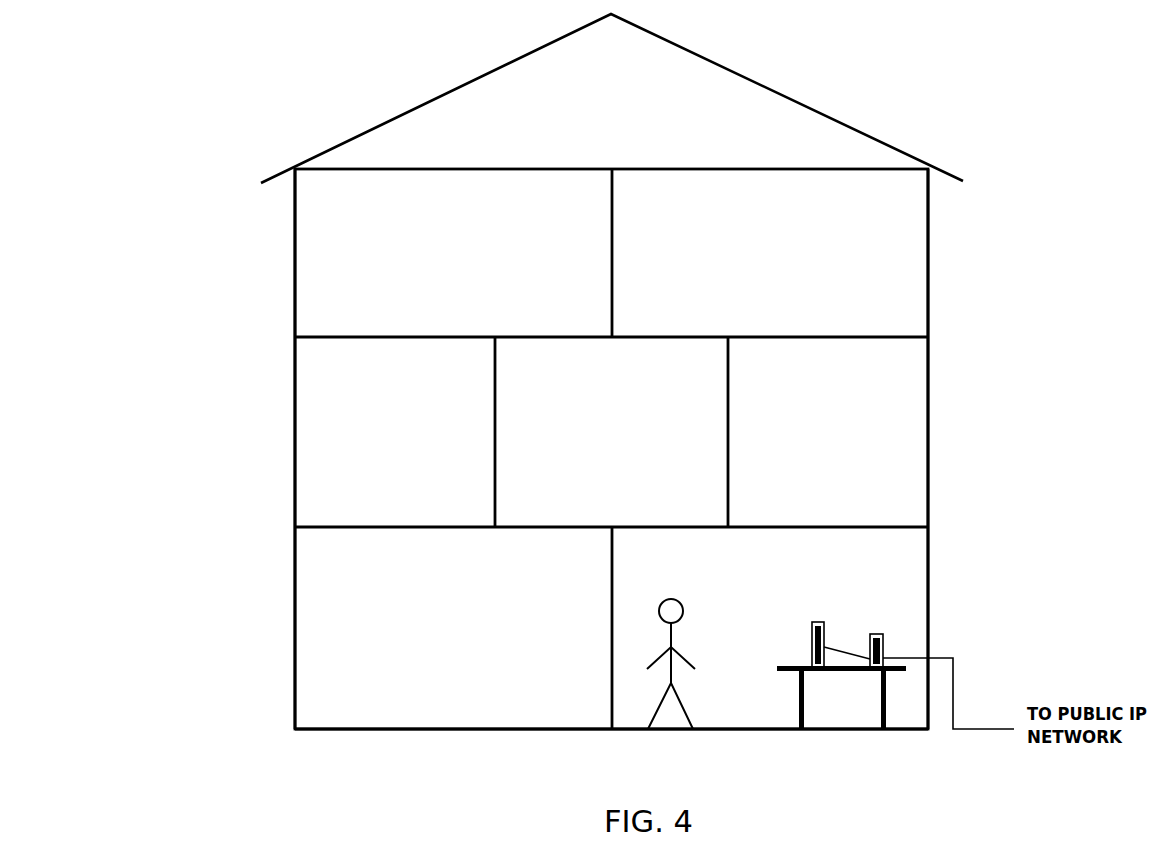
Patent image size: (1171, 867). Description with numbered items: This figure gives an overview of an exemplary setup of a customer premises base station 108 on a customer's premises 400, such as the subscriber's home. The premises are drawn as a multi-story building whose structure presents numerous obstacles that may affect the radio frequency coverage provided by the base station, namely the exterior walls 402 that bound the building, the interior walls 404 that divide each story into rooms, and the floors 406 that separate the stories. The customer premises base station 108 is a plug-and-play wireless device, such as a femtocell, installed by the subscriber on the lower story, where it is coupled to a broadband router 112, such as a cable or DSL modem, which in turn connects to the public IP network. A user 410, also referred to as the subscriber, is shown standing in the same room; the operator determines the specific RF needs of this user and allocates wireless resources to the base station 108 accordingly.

The customer's premises 400 is at (258, 98).
The exterior walls 402 is at (294, 418).
The interior walls 404 is at (612, 289).
The floors 406 is at (390, 336).
The user 410 is at (695, 622).
The customer premises base station 108 is at (825, 622).
The broadband router 112 is at (885, 632).